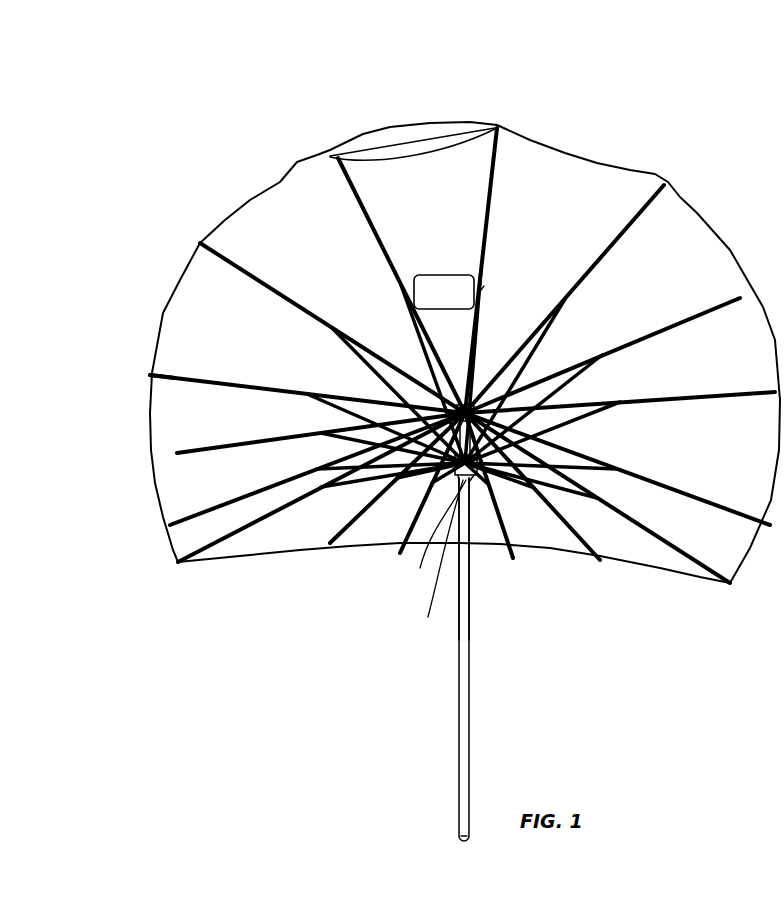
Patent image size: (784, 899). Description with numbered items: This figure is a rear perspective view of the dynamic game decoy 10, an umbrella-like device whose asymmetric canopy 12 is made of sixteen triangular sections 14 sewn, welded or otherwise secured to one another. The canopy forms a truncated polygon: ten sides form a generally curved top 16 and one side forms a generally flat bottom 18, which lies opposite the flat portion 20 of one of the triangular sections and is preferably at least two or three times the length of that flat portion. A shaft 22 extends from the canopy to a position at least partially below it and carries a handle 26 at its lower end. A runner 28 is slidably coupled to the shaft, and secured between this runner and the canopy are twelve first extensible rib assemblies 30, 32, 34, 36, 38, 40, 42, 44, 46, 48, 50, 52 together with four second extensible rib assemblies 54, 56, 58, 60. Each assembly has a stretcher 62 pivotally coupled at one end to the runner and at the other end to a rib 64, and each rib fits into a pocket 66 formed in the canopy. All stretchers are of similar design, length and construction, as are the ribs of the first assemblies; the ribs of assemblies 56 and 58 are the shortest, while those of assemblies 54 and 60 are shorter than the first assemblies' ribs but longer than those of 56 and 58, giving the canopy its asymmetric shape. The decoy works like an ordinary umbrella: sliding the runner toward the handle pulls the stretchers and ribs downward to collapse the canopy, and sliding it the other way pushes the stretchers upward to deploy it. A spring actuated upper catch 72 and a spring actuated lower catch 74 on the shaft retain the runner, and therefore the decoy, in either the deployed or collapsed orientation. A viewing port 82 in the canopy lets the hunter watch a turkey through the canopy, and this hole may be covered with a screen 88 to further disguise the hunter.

The dynamic game decoy 10 is at (593, 113).
The asymmetric canopy 12 is at (608, 173).
The triangular sections 14 is at (323, 172).
The curved top 16 is at (213, 189).
The flat bottom 18 is at (275, 607).
The flat portion 20 is at (415, 137).
The shaft 22 is at (468, 690).
The handle 26 is at (462, 843).
The runner 28 is at (425, 560).
The first extensible rib assembly 30 is at (655, 541).
The first extensible rib assembly 32 is at (672, 490).
The first extensible rib assembly 34 is at (690, 396).
The first extensible rib assembly 36 is at (673, 323).
The first extensible rib assembly 38 is at (592, 265).
The first extensible rib assembly 40 is at (487, 232).
The first extensible rib assembly 42 is at (369, 218).
The first extensible rib assembly 44 is at (257, 280).
The first extensible rib assembly 46 is at (199, 382).
The first extensible rib assembly 48 is at (195, 450).
The first extensible rib assembly 50 is at (183, 519).
The first extensible rib assembly 52 is at (225, 540).
The second extensible rib assembly 54 is at (345, 528).
The second extensible rib assembly 56 is at (412, 522).
The second extensible rib assembly 58 is at (500, 518).
The second extensible rib assembly 60 is at (574, 530).
The stretcher 62 is at (326, 337).
The rib 64 is at (370, 228).
The pocket 66 is at (150, 373).
The upper catch 72 is at (432, 596).
The lower catch 74 is at (471, 625).
The viewing port 82 is at (448, 273).
The screen 88 is at (480, 291).